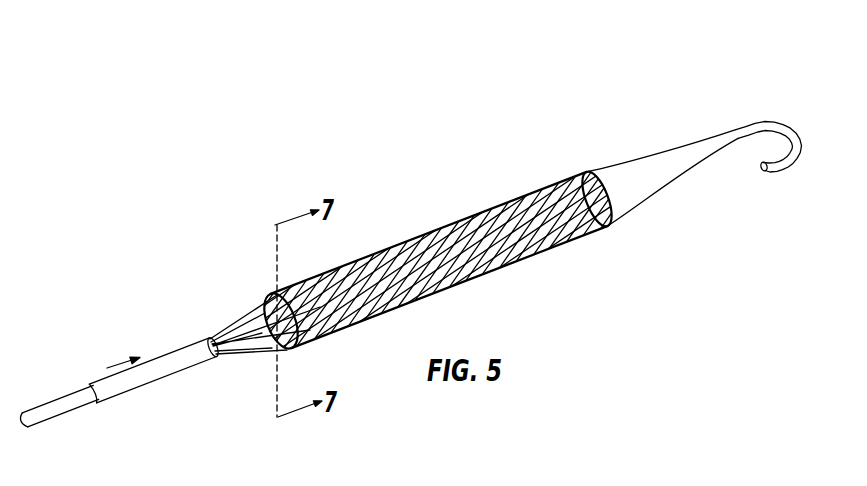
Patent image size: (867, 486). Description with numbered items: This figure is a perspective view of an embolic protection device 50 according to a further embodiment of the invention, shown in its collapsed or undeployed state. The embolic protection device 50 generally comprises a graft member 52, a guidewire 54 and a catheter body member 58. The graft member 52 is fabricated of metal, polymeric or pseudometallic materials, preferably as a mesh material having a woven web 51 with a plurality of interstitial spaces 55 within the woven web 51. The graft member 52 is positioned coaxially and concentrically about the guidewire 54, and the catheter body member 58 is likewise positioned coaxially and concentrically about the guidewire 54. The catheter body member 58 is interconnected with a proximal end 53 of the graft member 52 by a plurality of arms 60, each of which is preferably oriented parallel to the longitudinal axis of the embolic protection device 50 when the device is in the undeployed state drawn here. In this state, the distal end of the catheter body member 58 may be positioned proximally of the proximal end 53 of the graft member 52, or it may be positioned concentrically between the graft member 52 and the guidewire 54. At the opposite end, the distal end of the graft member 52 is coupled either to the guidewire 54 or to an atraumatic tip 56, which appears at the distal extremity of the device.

The embolic protection device 50 is at (760, 52).
The woven web 51 is at (418, 270).
The graft member 52 is at (513, 200).
The proximal end 53 is at (308, 328).
The guidewire 54 is at (50, 423).
The interstitial spaces 55 is at (413, 240).
The atraumatic tip 56 is at (634, 203).
The catheter body member 58 is at (173, 383).
The arms 60 is at (262, 302).